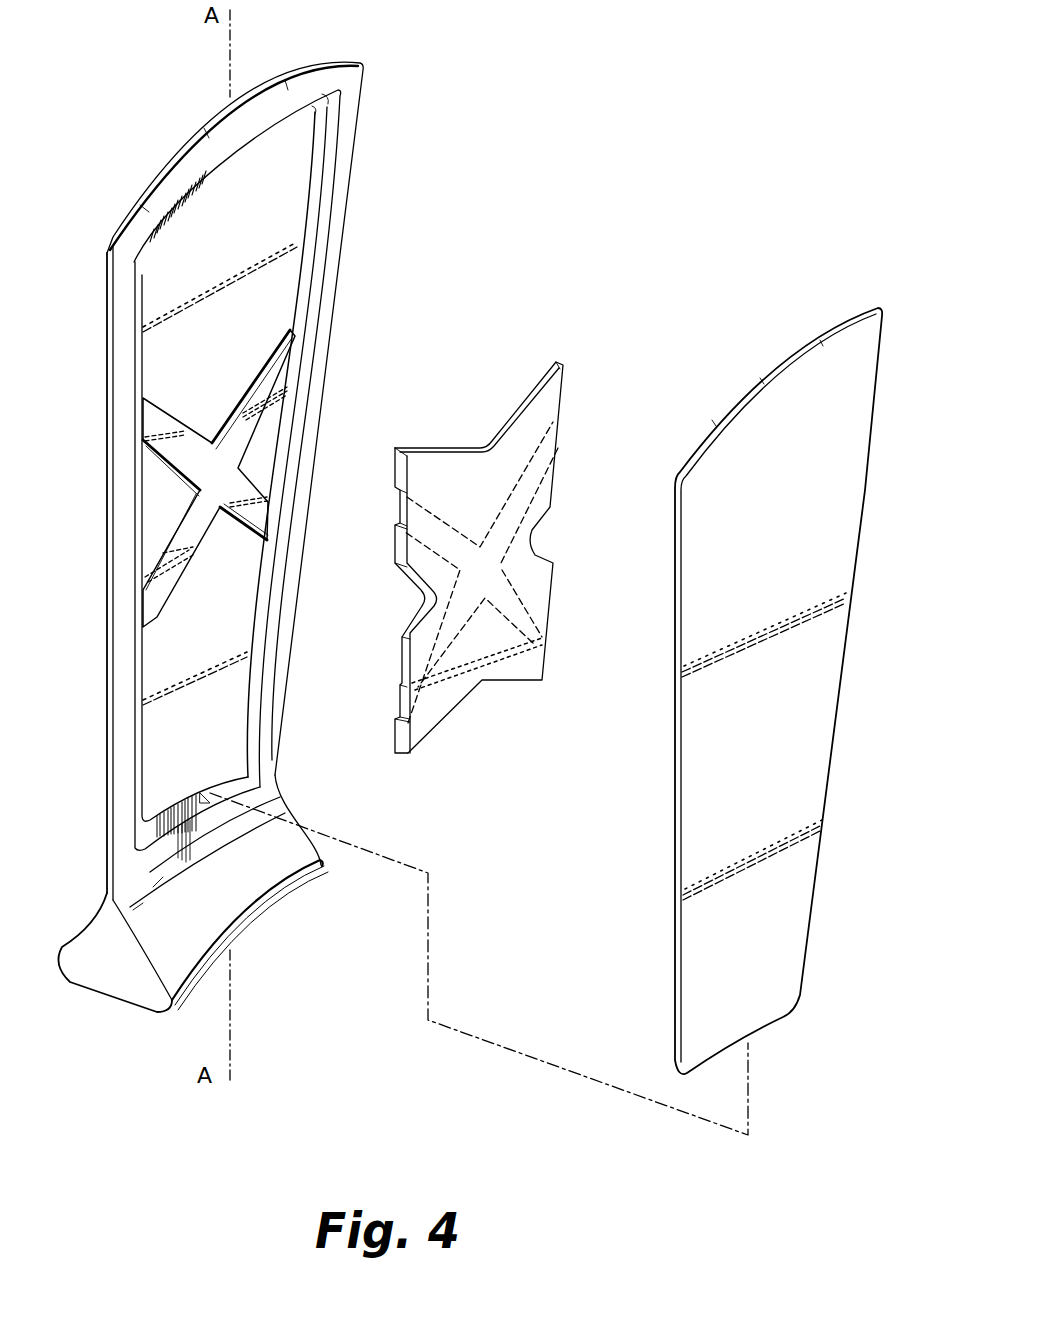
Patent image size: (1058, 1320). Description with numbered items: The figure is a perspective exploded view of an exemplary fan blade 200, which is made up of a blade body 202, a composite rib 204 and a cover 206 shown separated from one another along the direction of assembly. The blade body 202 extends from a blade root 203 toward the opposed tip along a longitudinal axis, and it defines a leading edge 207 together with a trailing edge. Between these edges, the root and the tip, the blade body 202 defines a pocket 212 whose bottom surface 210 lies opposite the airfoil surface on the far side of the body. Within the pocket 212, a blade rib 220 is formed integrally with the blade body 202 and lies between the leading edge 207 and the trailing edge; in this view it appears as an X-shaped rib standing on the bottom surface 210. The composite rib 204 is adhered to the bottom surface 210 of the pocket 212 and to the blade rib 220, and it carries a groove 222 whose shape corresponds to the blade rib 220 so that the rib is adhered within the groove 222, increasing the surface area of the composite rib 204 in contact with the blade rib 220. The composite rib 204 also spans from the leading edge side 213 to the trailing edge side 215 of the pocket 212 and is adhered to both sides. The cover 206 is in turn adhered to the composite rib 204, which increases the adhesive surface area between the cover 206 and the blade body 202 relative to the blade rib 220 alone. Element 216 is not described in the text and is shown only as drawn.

The fan blade 200 is at (622, 177).
The blade body 202 is at (101, 325).
The blade root 203 is at (265, 907).
The composite rib 204 is at (465, 435).
The cover 206 is at (709, 416).
The leading edge 207 is at (107, 517).
The bottom surface 210 is at (218, 713).
The pocket 212 is at (244, 178).
The leading edge side 213 is at (147, 668).
The trailing edge side 215 is at (293, 307).
The top rail corner 216 is at (338, 93).
The blade rib 220 is at (204, 443).
The groove 222 is at (400, 687).